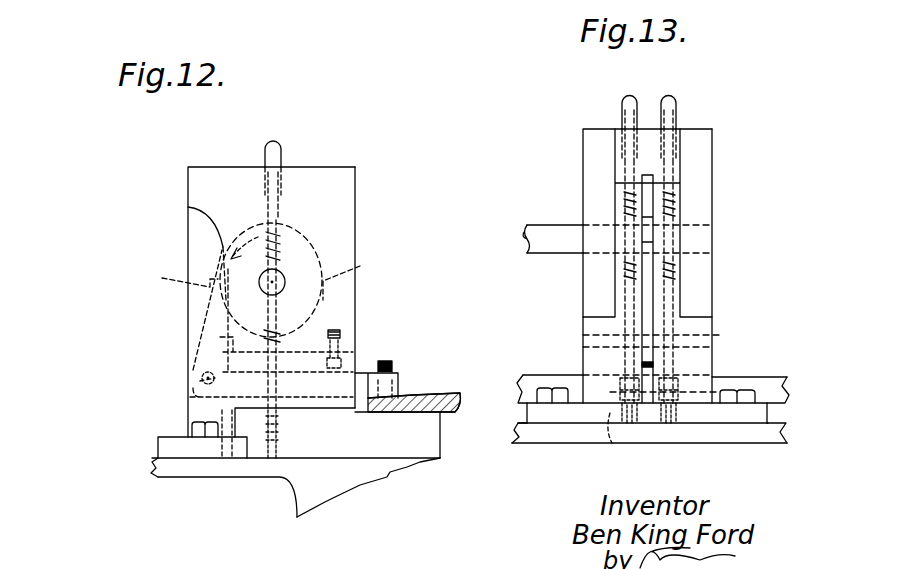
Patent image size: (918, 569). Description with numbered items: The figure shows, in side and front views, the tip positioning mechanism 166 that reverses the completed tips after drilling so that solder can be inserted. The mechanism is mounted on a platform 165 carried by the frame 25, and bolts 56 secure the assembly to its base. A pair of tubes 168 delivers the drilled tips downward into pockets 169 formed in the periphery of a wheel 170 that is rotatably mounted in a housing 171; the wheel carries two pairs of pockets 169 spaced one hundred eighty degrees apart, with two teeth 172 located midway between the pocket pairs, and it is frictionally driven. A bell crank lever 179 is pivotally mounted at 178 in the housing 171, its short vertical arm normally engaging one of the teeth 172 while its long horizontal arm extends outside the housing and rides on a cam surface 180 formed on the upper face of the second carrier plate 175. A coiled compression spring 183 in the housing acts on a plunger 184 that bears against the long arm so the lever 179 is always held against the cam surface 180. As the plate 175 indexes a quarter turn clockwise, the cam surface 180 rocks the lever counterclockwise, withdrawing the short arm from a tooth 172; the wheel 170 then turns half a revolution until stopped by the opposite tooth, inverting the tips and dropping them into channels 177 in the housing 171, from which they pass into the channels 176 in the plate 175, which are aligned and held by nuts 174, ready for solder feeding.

In FIG. 12, the frame 25 is at (325, 501).
In FIG. 12, the bolts 56 is at (225, 420).
In FIG. 13, the bolts 56 is at (713, 377).
In FIG. 12, the platform 165 is at (235, 467).
In FIG. 13, the platform 165 is at (550, 430).
In FIG. 12, the tip positioning mechanism 166 is at (183, 231).
In FIG. 13, the tip positioning mechanism 166 is at (582, 160).
In FIG. 12, the tubes 168 is at (283, 157).
In FIG. 13, the tubes 168 is at (660, 106).
In FIG. 12, the pockets 169 is at (278, 242).
In FIG. 13, the pockets 169 is at (625, 207).
In FIG. 12, the wheel 170 is at (253, 222).
In FIG. 13, the wheel 170 is at (648, 236).
In FIG. 12, the housing 171 is at (355, 237).
In FIG. 13, the housing 171 is at (712, 177).
In FIG. 12, the teeth 172 is at (267, 277).
In FIG. 13, the nuts 174 is at (623, 358).
In FIG. 12, the second carrier plate 175 is at (457, 434).
In FIG. 13, the second carrier plate 175 is at (520, 398).
In FIG. 12, the channels 176 is at (280, 449).
In FIG. 13, the channels 176 is at (627, 437).
In FIG. 12, the channels 177 is at (262, 381).
In FIG. 12, the pivot 178 is at (200, 381).
In FIG. 13, the pivot 178 is at (588, 347).
In FIG. 12, the bell crank lever 179 is at (200, 317).
In FIG. 13, the bell crank lever 179 is at (648, 283).
In FIG. 12, the cam surface 180 is at (412, 393).
In FIG. 13, the cam surface 180 is at (647, 370).
In FIG. 12, the coiled compression spring 183 is at (341, 330).
In FIG. 12, the plunger 184 is at (341, 357).